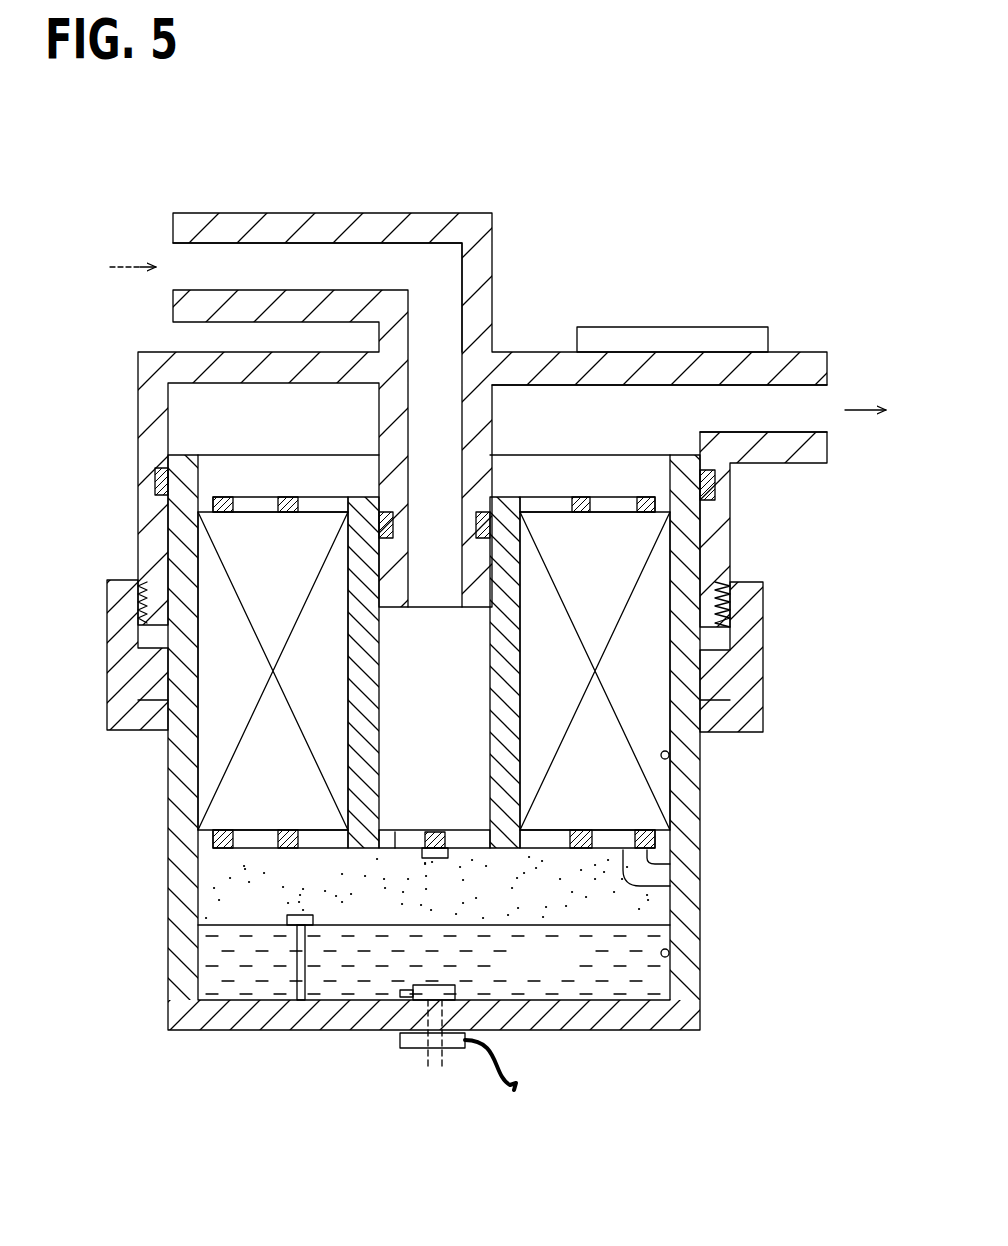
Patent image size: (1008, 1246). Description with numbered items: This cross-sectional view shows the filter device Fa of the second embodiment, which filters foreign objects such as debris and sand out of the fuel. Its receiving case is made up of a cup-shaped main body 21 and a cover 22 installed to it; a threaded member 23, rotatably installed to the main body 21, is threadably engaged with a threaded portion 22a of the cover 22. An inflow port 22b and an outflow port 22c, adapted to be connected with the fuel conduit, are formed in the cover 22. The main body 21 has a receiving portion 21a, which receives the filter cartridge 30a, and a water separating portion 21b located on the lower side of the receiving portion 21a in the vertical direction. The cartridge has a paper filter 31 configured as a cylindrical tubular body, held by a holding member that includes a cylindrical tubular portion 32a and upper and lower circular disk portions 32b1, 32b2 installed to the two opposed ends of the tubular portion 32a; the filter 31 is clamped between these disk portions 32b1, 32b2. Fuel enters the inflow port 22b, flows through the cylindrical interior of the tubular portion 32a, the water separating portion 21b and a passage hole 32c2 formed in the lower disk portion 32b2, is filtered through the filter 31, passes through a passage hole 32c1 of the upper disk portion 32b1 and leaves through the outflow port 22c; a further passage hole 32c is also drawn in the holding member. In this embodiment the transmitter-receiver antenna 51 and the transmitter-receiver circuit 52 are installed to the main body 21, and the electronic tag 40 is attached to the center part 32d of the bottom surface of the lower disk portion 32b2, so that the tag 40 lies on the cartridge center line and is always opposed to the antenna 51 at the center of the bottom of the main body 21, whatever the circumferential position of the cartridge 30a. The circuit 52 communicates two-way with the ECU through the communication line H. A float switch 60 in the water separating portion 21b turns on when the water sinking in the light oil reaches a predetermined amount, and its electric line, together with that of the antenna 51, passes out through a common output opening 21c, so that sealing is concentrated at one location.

The cover 22 is at (150, 350).
The threaded portion 22a is at (143, 592).
The inflow port 22b is at (173, 216).
The outflow port 22c is at (810, 463).
The threaded member 23 is at (107, 622).
The filter 31 is at (643, 670).
The main body 21 is at (168, 936).
The receiving portion 21a is at (669, 755).
The water separating portion 21b is at (669, 953).
The output opening 21c is at (428, 1055).
The filter cartridge 30a is at (210, 760).
The cylindrical tubular portion 32a is at (520, 773).
The upper circular disk portion 32b1 is at (217, 497).
The lower circular disk portion 32b2 is at (626, 849).
The communication hole 32c is at (397, 848).
The passage hole 32c1 is at (248, 495).
The passage hole 32c2 is at (672, 887).
The center part 32d is at (437, 832).
The electronic tag 40 is at (435, 858).
The filter device Fa is at (156, 1003).
The float switch 60 is at (300, 915).
The transmitter-receiver antenna 51 is at (413, 992).
The transmitter-receiver circuit 52 is at (440, 1048).
The communication line H is at (510, 1090).